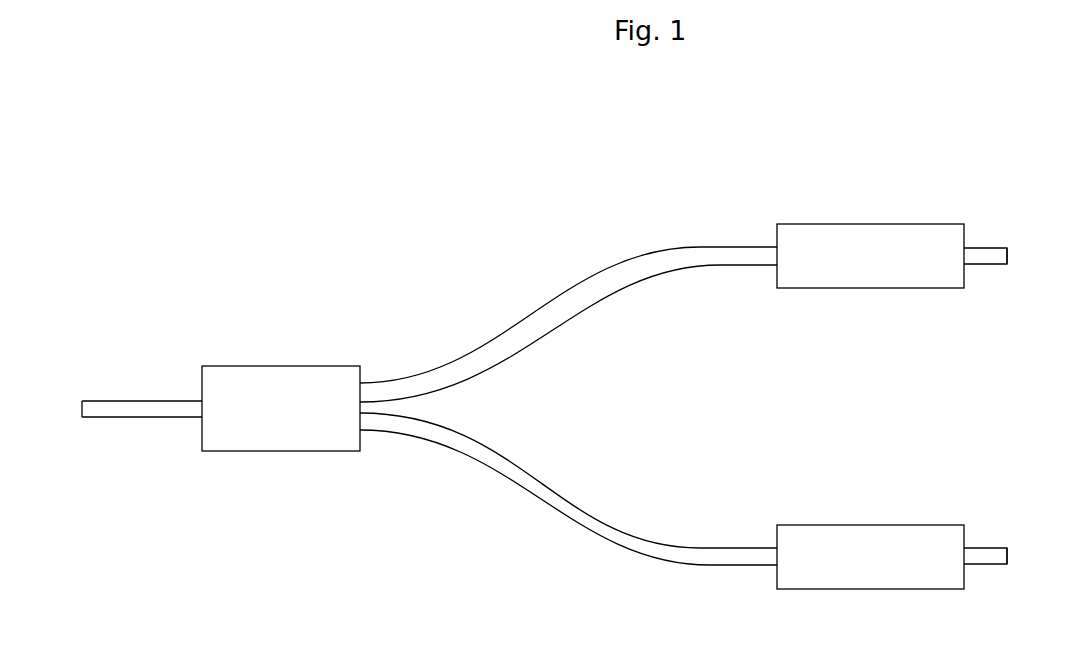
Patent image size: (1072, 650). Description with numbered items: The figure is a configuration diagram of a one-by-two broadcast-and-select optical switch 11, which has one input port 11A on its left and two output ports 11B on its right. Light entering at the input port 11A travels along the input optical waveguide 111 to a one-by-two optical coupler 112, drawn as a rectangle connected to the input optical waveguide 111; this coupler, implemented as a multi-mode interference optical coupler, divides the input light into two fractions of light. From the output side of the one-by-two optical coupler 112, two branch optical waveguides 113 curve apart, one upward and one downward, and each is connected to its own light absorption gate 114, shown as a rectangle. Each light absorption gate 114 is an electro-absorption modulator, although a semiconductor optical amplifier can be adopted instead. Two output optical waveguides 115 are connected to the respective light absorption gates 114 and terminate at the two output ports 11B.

The broadcast-and-select optical switch 11 is at (540, 152).
The input port 11A is at (57, 411).
The output ports 11B is at (1032, 406).
The input optical waveguide 111 is at (142, 398).
The 1×2 optical coupler 112 is at (284, 366).
The branch optical waveguides 113 is at (598, 265).
The light absorption gates 114 is at (928, 224).
The output optical waveguides 115 is at (982, 268).